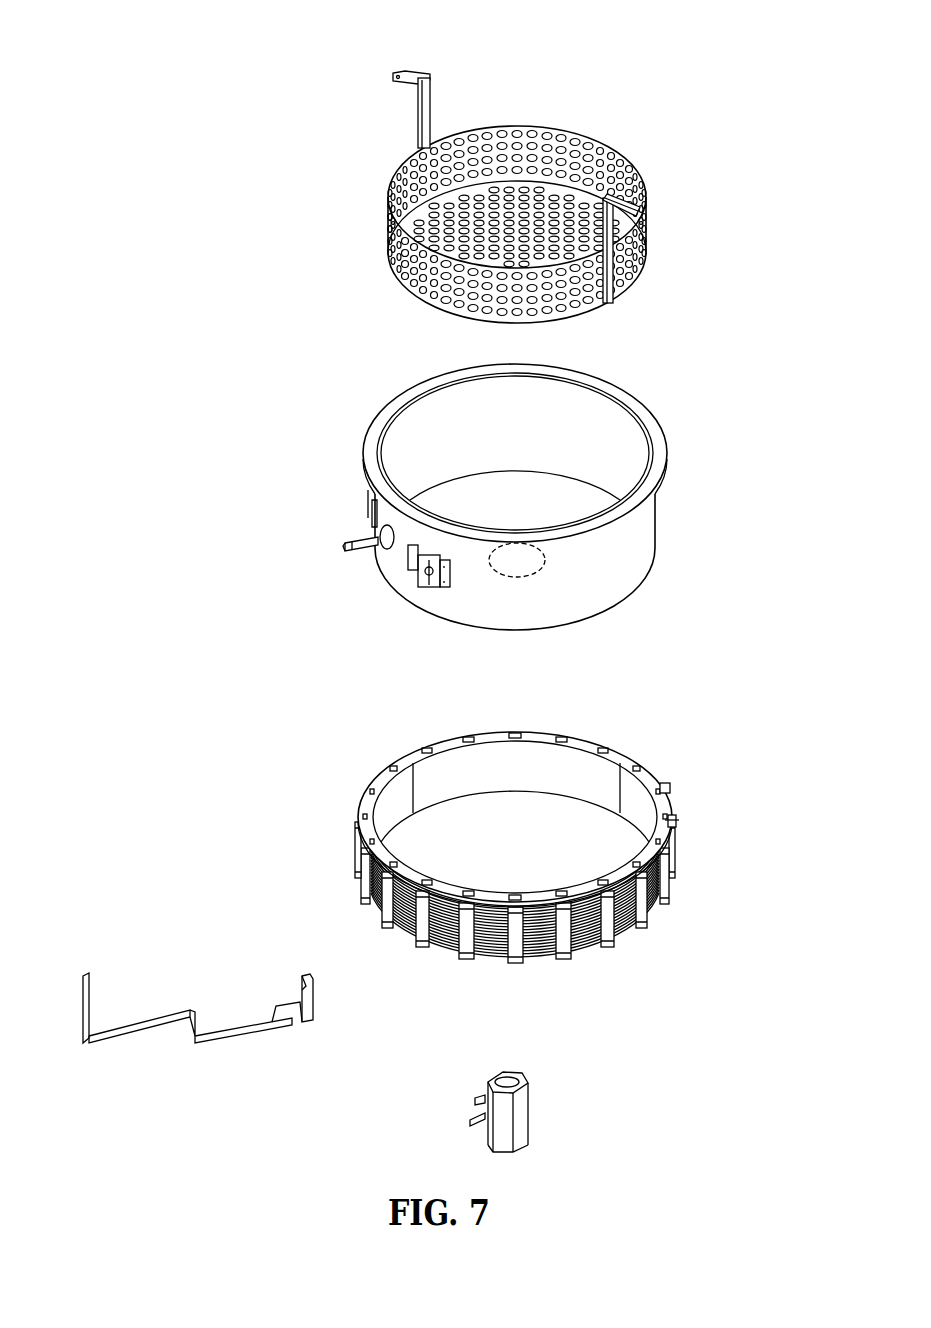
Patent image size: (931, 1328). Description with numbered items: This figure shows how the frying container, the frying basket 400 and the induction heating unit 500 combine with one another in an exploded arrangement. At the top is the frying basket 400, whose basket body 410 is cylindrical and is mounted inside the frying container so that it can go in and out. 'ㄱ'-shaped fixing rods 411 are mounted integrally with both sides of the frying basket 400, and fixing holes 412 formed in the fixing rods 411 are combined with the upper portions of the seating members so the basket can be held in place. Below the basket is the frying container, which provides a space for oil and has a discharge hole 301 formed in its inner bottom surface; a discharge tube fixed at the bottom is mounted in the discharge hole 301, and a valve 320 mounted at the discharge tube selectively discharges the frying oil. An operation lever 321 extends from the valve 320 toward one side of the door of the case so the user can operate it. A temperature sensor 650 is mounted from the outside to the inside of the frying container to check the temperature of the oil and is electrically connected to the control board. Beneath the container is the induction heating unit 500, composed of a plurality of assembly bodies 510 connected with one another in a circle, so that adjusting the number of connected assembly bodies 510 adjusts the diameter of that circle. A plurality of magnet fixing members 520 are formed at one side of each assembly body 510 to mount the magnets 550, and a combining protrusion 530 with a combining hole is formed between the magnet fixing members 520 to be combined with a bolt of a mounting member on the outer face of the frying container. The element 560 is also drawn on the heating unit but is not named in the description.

The frying basket 400 is at (598, 126).
The basket body 410 is at (472, 127).
The fixing rod 411 is at (641, 182).
The fixing hole 412 is at (642, 204).
The discharge hole 301 is at (545, 555).
The temperature sensor 650 is at (362, 534).
The induction heating unit 500 is at (536, 833).
The assembly body 510 is at (585, 757).
The magnet fixing member 520 is at (665, 790).
The combining protrusion 530 is at (675, 820).
The magnet 550 is at (621, 918).
The stator tooth 560 is at (643, 903).
The valve 320 is at (522, 1115).
The operation lever 321 is at (229, 1032).